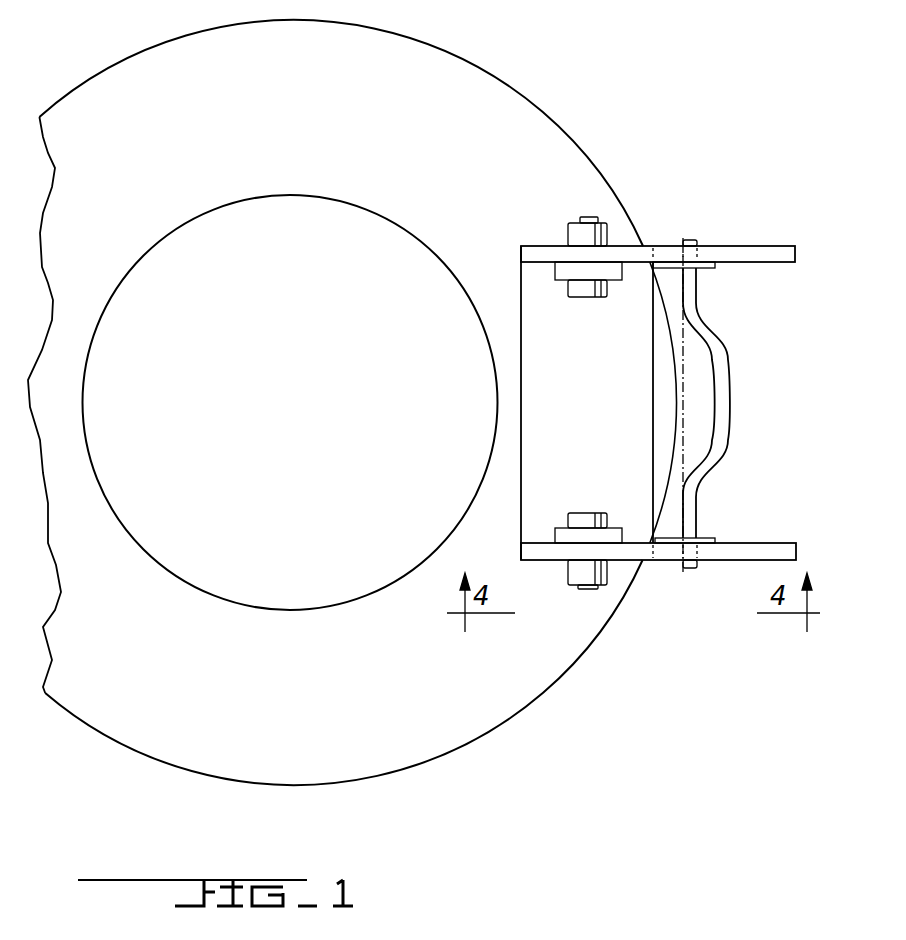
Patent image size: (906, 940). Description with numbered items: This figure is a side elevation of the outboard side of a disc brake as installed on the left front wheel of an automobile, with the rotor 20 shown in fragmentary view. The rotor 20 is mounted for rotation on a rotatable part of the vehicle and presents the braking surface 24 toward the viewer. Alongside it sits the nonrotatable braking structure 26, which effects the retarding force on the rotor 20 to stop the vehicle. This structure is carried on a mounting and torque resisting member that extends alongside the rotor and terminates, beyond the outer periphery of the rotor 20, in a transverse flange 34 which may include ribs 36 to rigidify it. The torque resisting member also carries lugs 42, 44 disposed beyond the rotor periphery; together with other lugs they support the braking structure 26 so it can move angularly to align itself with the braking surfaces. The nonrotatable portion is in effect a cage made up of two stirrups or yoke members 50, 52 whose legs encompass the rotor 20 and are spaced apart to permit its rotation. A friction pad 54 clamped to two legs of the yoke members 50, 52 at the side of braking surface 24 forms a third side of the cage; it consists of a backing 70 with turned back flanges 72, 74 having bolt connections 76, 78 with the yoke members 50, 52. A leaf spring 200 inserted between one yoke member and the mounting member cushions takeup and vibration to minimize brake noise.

The rotor 20 is at (534, 700).
The braking surface 24 is at (385, 737).
The nonrotatable braking structure 26 is at (657, 241).
The transverse flange 34 is at (700, 512).
The ribs 36 is at (725, 380).
The lug 42 is at (688, 570).
The lug 44 is at (689, 241).
The yoke member 50 is at (755, 552).
The yoke member 52 is at (763, 253).
The friction pad 54 is at (520, 433).
The backing 70 is at (548, 377).
The turned back flange 72 is at (567, 270).
The turned back flange 74 is at (540, 548).
The bolt connection 76 is at (588, 232).
The bolt connection 78 is at (568, 572).
The leaf spring 200 is at (712, 268).